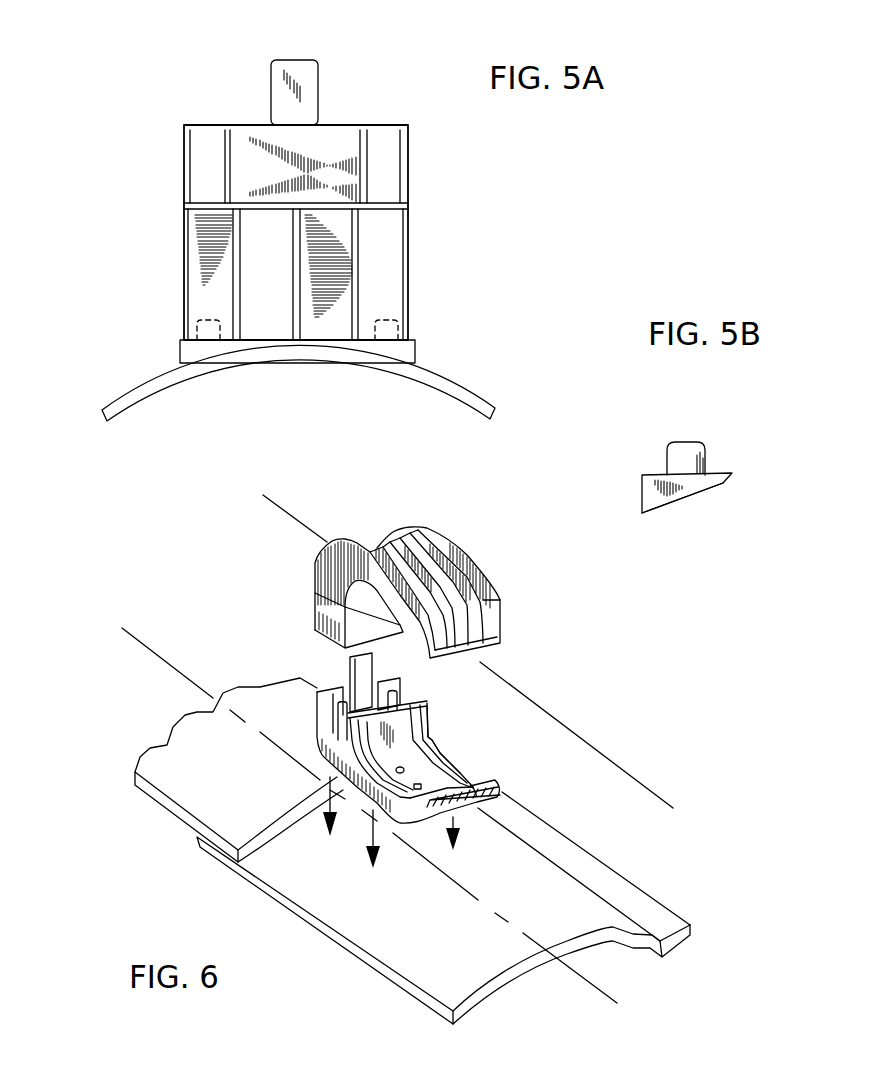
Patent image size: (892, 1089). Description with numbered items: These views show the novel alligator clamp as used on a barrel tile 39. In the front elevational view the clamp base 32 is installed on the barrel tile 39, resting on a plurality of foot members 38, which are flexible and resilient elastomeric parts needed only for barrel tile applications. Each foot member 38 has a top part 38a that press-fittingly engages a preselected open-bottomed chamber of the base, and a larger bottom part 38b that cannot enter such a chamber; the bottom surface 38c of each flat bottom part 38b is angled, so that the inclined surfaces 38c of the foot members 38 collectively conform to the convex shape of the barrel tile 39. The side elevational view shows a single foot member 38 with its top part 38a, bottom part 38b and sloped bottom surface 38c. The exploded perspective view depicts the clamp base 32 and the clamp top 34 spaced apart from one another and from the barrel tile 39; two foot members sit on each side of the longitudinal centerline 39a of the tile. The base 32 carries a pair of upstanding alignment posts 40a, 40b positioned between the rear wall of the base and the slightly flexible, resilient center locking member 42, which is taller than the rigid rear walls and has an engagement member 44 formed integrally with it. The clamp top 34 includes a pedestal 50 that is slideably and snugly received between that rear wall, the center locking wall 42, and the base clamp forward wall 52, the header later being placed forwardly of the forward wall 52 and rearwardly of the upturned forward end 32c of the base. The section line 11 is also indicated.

In FIG. 6, the section line 11- 11 is at (280, 502).
In FIG. 5A, the clamp base 32 is at (244, 117).
In FIG. 6, the upturned forward end 32c is at (406, 751).
In FIG. 6, the clamp top 34 is at (377, 588).
In FIG. 5A, the foot member 38 is at (158, 312).
In FIG. 5B, the foot member 38 is at (697, 462).
In FIG. 5B, the top part 38a is at (685, 442).
In FIG. 5B, the bottom part 38b is at (642, 494).
In FIG. 5A, the bottom surface 38c is at (233, 352).
In FIG. 5B, the bottom surface 38c is at (700, 493).
In FIG. 5A, the barrel tile 39 is at (448, 377).
In FIG. 6, the barrel tile 39 is at (273, 692).
In FIG. 6, the longitudinal centerline 39a is at (150, 648).
In FIG. 6, the alignment post 40a is at (350, 724).
In FIG. 6, the alignment post 40b is at (400, 695).
In FIG. 5A, the center locking member 42 is at (300, 60).
In FIG. 6, the center locking member 42 is at (350, 660).
In FIG. 6, the engagement member 44 is at (372, 688).
In FIG. 6, the pedestal 50 is at (317, 613).
In FIG. 6, the forward wall 52 is at (423, 712).